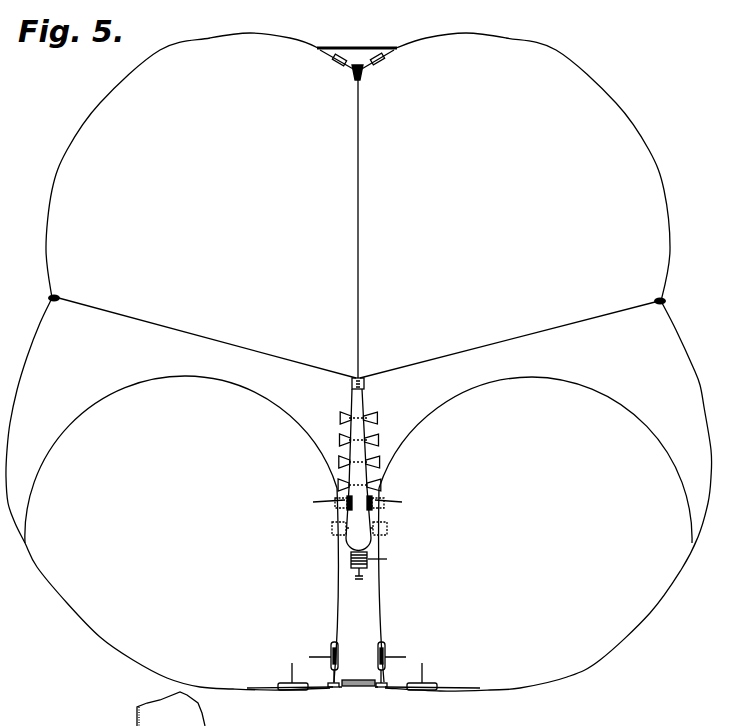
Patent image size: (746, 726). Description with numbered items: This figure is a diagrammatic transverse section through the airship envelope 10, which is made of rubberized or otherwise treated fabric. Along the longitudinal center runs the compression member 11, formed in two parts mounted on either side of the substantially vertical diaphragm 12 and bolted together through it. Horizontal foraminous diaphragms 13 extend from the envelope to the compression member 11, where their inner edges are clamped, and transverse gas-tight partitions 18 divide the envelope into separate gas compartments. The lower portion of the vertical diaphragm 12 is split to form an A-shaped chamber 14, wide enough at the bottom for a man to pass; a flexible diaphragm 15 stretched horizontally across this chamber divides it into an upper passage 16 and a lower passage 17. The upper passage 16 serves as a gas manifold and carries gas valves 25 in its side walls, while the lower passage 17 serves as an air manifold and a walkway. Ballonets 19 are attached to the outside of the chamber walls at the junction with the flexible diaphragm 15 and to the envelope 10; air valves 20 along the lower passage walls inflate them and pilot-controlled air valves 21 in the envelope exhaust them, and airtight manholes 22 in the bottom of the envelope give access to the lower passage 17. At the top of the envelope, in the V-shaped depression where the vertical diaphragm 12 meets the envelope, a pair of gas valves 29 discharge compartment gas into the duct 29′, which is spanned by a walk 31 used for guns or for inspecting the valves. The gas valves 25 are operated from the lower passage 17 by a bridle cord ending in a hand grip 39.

The envelope 10 is at (689, 345).
The compression member 11 is at (366, 383).
The vertical diaphragm 12 is at (358, 205).
The foraminous diaphragm 13 is at (228, 344).
The A-shaped chamber 14 is at (370, 587).
The flexible diaphragm 15 is at (346, 547).
The upper passage 16 is at (358, 448).
The lower passage 17 is at (340, 614).
The transverse vertical gas tight partition 18 is at (338, 226).
The ballonet 19 is at (185, 378).
The air valve 20 is at (378, 657).
The air valve 21 is at (295, 691).
The manhole 22 is at (360, 686).
The gas valve 25 is at (342, 512).
The gas valve 29 is at (384, 60).
The duct 29′ is at (334, 62).
The walk 31 is at (340, 39).
The hand grip 39 is at (354, 578).